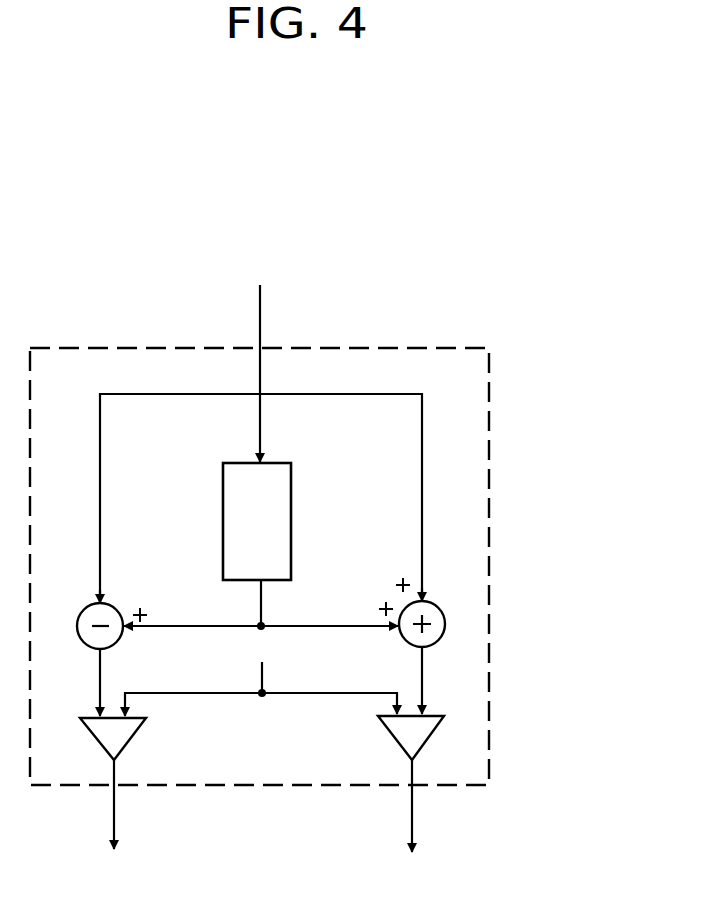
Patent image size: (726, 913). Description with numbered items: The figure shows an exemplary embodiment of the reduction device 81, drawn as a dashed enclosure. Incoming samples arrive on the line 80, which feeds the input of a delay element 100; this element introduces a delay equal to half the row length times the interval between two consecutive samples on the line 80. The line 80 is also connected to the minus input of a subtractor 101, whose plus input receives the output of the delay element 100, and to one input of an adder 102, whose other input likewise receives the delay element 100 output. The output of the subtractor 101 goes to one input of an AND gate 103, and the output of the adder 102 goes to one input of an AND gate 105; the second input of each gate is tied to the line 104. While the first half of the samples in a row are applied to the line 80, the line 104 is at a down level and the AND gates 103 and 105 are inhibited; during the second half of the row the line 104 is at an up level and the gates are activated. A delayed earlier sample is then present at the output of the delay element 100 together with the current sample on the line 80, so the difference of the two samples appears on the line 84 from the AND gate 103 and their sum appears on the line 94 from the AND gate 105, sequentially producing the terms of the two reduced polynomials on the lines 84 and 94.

The line 80 is at (260, 322).
The reduction device 81 is at (488, 405).
The delay element 100 is at (291, 522).
The subtractor 101 is at (92, 602).
The adder 102 is at (430, 600).
The AND gate 103 is at (133, 740).
The line 104 is at (258, 684).
The AND gate 105 is at (385, 730).
The line 84 is at (115, 805).
The line 94 is at (413, 823).